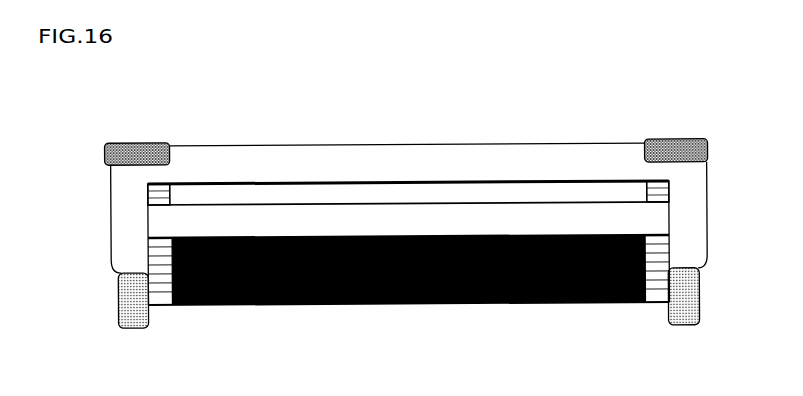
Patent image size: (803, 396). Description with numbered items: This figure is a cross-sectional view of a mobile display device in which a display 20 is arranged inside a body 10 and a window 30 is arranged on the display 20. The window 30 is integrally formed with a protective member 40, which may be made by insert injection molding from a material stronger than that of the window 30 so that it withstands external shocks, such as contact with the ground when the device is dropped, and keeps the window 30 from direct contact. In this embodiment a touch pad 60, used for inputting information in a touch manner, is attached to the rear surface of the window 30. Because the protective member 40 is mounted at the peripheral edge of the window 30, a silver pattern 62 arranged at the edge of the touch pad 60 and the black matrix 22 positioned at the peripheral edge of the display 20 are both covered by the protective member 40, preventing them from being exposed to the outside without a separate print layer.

The body 10 is at (690, 298).
The display 20 is at (378, 306).
The black matrix 22 is at (188, 305).
The window 30 is at (383, 161).
The protective member 40 is at (133, 143).
The touch pad 60 is at (363, 155).
The silver pattern 62 is at (150, 196).